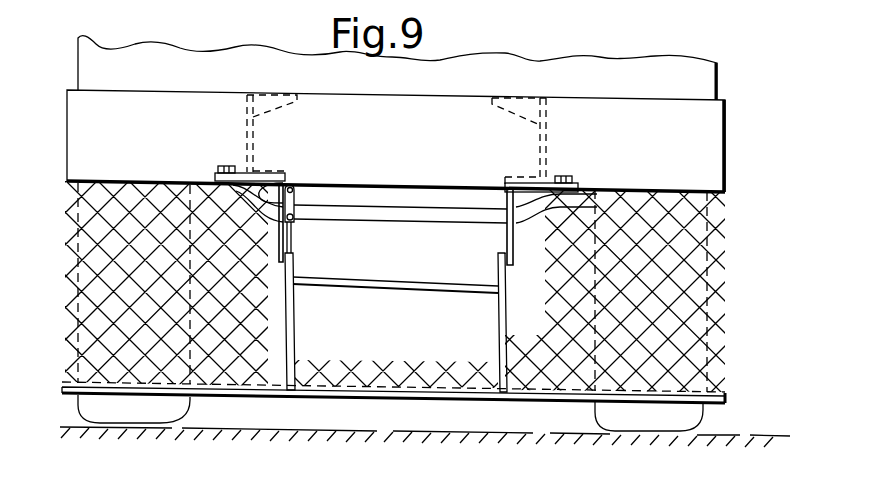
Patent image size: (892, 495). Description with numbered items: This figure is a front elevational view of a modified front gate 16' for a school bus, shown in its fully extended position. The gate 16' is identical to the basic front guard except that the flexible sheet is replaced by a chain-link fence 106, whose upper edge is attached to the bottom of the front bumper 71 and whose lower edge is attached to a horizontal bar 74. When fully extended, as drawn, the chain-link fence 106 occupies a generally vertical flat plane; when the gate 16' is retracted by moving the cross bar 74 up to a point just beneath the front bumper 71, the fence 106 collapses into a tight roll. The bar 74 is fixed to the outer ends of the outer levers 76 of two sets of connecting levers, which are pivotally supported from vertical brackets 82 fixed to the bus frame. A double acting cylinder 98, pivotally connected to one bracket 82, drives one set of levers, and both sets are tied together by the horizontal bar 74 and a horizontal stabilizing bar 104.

The front bumper 71 is at (708, 134).
The vertical bracket 82 is at (266, 179).
The double acting cylinder 98 is at (297, 203).
The outer lever 76 is at (298, 386).
The horizontal stabilizing bar 104 is at (372, 290).
The chain-link fence 106 is at (714, 298).
The horizontal bar 74 is at (728, 400).
The modified front gate 16' is at (654, 223).